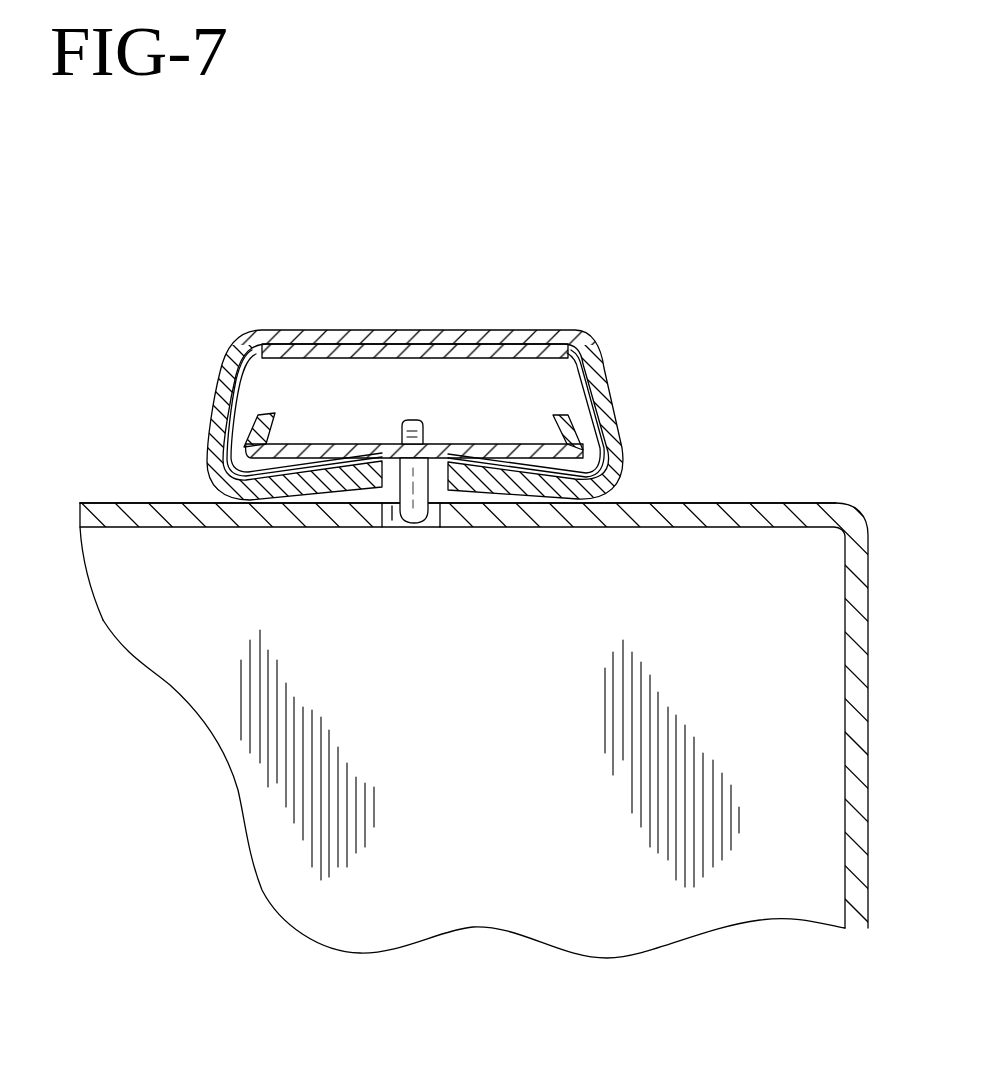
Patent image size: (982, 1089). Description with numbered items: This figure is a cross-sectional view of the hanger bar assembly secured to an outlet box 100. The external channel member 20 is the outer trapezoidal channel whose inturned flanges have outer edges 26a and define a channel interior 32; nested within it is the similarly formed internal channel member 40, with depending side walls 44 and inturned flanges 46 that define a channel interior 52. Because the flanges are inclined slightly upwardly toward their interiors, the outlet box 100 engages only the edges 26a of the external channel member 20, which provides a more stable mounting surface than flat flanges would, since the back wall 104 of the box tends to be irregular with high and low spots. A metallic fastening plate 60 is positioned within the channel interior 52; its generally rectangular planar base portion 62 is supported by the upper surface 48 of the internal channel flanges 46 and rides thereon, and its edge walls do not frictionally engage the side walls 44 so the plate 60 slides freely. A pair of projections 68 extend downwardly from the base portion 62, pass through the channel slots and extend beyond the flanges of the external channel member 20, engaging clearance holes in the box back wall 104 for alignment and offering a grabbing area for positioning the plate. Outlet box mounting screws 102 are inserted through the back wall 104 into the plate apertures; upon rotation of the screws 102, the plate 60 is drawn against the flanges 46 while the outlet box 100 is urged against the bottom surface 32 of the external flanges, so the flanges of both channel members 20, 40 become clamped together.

The external channel member 20 is at (421, 438).
The internal channel member 40 is at (597, 345).
The side walls 44 is at (212, 418).
The inturned flanges 46 is at (563, 492).
The upper surface 48 is at (596, 486).
The channel interior 32 is at (260, 523).
The channel interior 52 is at (373, 383).
The fastening plate 60 is at (292, 442).
The base portion 62 is at (510, 446).
The outlet box mounting screws 102 is at (420, 433).
The projections 68 is at (411, 517).
The outlet box 100 is at (494, 693).
The edges 26a is at (176, 502).
The back wall 104 is at (103, 512).